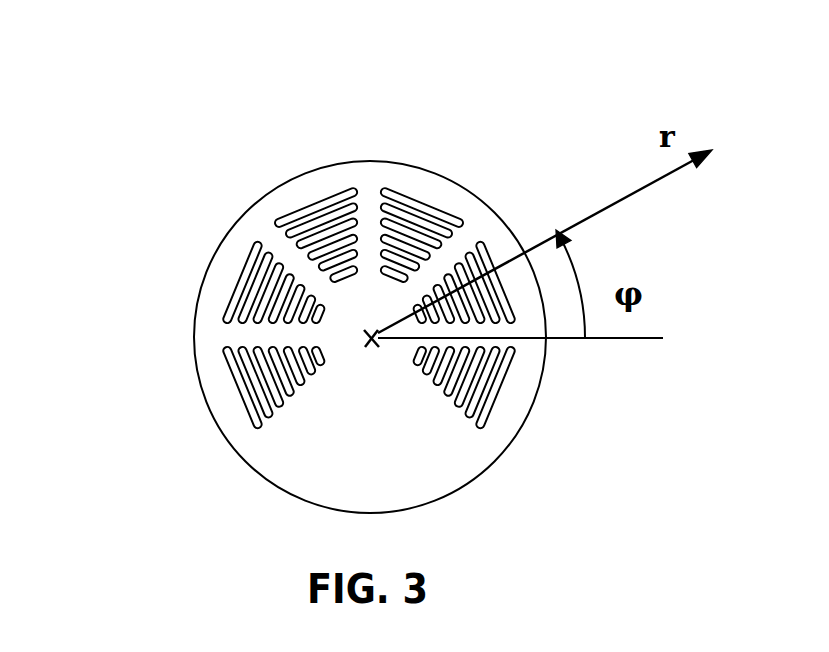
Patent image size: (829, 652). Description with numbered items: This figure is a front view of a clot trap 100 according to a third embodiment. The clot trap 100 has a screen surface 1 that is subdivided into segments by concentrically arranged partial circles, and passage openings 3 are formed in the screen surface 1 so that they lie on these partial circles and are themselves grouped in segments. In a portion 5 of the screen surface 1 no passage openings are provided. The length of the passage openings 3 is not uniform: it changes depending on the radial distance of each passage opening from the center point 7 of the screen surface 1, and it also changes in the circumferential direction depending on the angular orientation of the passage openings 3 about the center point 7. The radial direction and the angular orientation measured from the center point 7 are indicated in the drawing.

The clot trap 100 is at (243, 190).
The screen surface 1 is at (290, 253).
The passage openings 3 is at (443, 210).
The portion 5 is at (398, 413).
The center point 7 is at (368, 339).